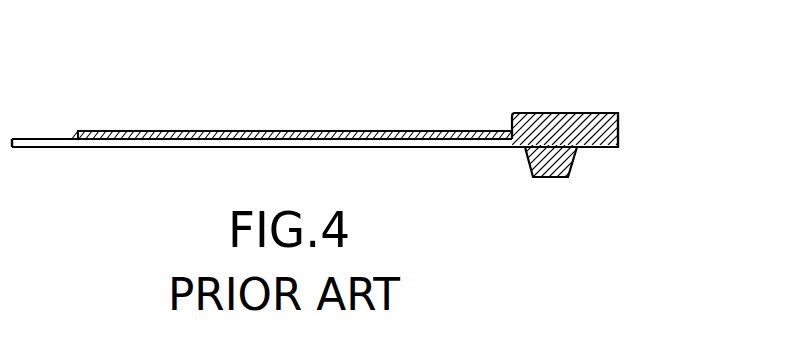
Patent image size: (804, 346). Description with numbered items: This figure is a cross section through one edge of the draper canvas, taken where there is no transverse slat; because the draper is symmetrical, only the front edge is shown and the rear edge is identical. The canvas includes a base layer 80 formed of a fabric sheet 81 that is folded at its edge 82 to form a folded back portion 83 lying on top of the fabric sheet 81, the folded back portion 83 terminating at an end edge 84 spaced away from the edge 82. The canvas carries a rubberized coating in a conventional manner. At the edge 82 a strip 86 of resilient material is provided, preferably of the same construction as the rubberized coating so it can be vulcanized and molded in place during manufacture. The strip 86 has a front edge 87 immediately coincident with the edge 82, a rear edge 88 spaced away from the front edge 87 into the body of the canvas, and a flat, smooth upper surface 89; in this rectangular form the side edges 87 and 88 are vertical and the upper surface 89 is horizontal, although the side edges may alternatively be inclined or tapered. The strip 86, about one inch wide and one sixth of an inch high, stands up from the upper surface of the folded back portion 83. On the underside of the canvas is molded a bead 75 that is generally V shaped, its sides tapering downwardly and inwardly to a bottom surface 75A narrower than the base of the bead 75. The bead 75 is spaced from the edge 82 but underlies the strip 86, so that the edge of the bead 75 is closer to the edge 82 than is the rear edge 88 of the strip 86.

The bead 75 is at (527, 173).
The bottom surface of the bead 75A is at (548, 178).
The base layer 80 is at (385, 150).
The fabric sheet 81 is at (45, 148).
The edge of the fabric sheet 82 is at (620, 135).
The folded back portion 83 is at (312, 132).
The end edge of the folded back portion 84 is at (80, 134).
The strip of resilient material 86 is at (600, 108).
The front edge of the strip 87 is at (618, 113).
The rear edge of the strip 88 is at (503, 118).
The upper surface of the strip 89 is at (558, 112).